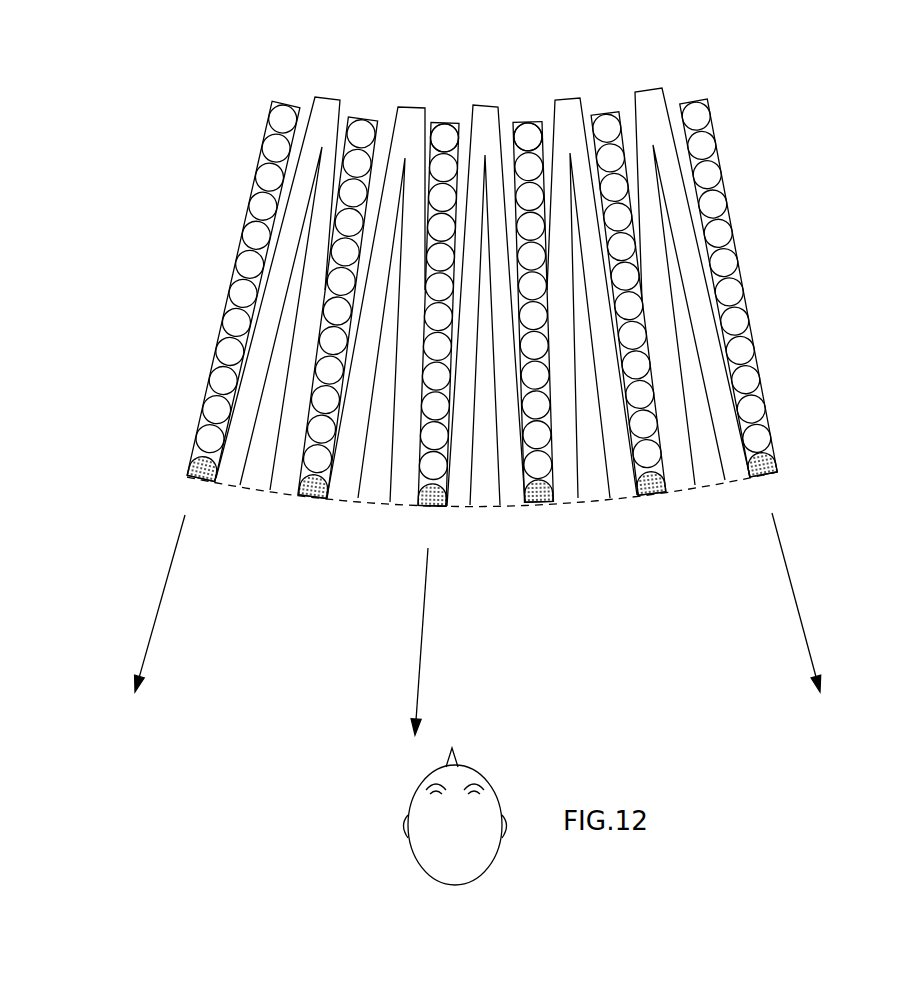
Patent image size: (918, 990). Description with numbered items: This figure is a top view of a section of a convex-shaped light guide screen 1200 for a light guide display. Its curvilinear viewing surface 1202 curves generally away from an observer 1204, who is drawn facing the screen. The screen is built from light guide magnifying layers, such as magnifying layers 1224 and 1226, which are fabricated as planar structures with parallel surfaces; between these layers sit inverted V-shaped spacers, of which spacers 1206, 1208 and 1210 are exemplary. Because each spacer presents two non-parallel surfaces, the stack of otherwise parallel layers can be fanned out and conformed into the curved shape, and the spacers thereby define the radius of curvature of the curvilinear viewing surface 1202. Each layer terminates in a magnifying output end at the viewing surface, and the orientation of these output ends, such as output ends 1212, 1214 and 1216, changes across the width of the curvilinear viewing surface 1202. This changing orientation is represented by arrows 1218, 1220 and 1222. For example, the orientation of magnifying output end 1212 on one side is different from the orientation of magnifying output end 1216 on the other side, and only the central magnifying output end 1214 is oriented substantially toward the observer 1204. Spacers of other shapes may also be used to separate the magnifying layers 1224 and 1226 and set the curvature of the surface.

The convex-shaped light guide screen 1200 is at (742, 88).
The curvilinear viewing surface 1202 is at (685, 488).
The observer 1204 is at (432, 842).
The spacer 1206 is at (347, 482).
The spacer 1208 is at (462, 472).
The spacer 1210 is at (568, 452).
The magnifying output end 1212 is at (307, 482).
The magnifying output end 1214 is at (456, 316).
The magnifying output end 1216 is at (568, 309).
The arrow 1218 is at (157, 605).
The arrow 1220 is at (427, 578).
The arrow 1222 is at (805, 635).
The magnifying layer 1224 is at (445, 133).
The magnifying layer 1226 is at (525, 138).